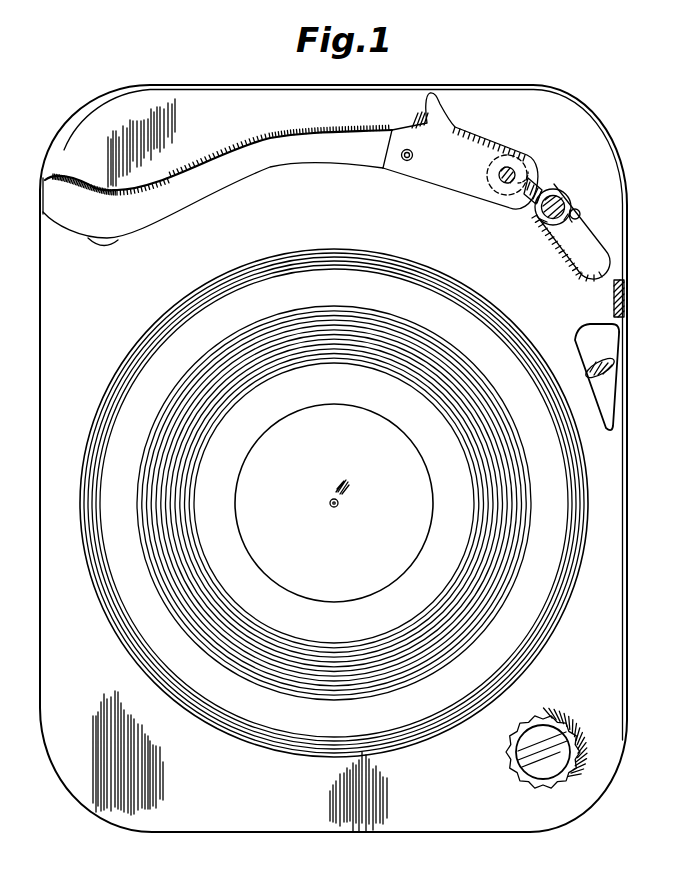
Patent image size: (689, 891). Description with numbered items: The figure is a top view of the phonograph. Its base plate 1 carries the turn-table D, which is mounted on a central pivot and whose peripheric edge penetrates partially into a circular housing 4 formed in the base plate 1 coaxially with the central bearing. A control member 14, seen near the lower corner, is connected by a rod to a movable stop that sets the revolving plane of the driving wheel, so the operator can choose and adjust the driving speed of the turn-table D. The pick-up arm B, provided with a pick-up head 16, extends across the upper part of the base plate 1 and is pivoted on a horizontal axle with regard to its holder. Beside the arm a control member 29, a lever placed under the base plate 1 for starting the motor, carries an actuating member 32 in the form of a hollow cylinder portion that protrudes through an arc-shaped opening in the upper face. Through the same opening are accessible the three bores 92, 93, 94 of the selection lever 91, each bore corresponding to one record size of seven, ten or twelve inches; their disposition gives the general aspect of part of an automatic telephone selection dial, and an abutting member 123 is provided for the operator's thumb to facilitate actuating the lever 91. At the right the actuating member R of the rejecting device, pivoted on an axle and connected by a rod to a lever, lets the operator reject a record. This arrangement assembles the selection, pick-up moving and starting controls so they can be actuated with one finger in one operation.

The base plate 1 is at (333, 458).
The arm B is at (217, 185).
The pick-up head 16 is at (460, 151).
The bore 92 is at (510, 158).
The bore 93 is at (541, 188).
The selection lever 91 is at (548, 203).
The bore 94 is at (560, 208).
The actuating member 32 is at (578, 213).
The control member 29 is at (571, 232).
The abutting member 123 is at (618, 286).
The actuating member R is at (607, 362).
The turn-table D is at (334, 503).
The circular housing 4 is at (431, 740).
The control member 14 is at (513, 762).